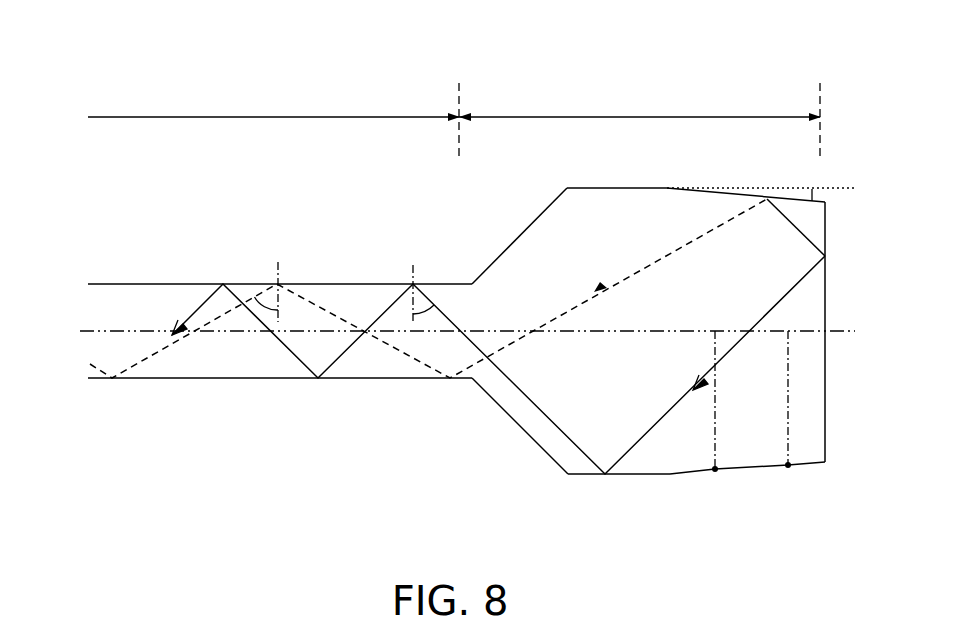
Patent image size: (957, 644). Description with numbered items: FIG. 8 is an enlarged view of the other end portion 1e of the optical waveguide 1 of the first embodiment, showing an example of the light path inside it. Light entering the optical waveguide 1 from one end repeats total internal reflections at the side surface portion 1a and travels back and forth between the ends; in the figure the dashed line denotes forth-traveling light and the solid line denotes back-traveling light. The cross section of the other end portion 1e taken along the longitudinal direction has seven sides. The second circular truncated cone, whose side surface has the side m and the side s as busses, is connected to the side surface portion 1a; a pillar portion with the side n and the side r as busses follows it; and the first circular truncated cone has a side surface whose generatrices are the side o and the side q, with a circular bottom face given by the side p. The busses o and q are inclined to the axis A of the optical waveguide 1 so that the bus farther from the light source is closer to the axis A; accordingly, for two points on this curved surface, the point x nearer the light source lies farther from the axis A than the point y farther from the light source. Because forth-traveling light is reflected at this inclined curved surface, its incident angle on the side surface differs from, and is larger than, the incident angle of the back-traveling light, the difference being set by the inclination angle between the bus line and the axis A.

The optical waveguide 1 is at (148, 302).
The side surface portion 1a is at (273, 121).
The other end portion 1e is at (639, 121).
The axis A is at (477, 332).
The side m is at (532, 222).
The side n is at (612, 188).
The side o is at (742, 192).
The side p is at (826, 372).
The side s is at (538, 445).
The side r is at (630, 477).
The side q is at (743, 470).
The point x is at (715, 472).
The point y is at (792, 467).